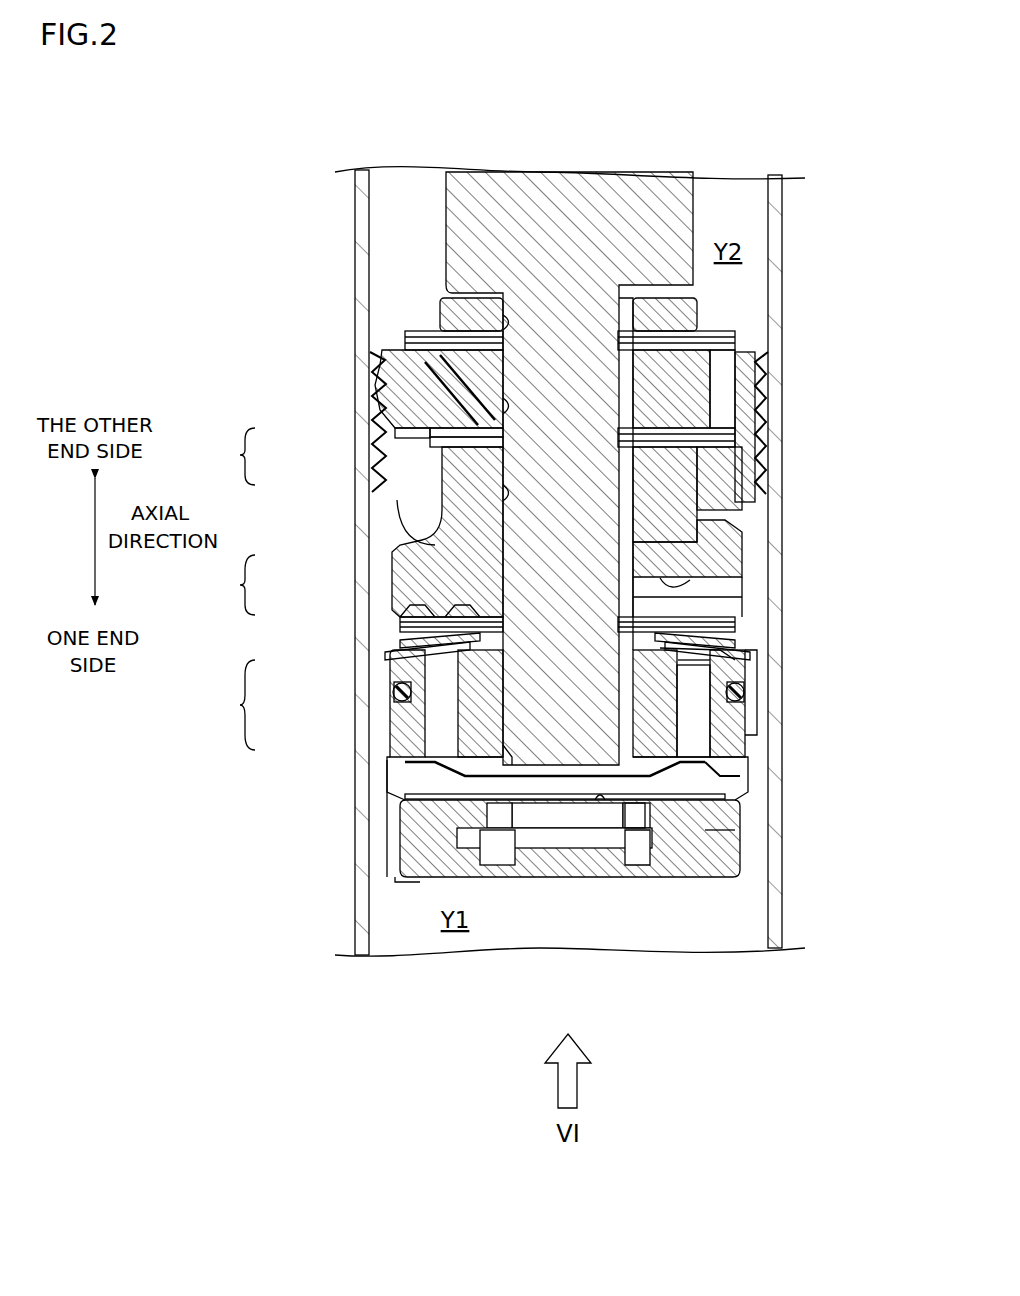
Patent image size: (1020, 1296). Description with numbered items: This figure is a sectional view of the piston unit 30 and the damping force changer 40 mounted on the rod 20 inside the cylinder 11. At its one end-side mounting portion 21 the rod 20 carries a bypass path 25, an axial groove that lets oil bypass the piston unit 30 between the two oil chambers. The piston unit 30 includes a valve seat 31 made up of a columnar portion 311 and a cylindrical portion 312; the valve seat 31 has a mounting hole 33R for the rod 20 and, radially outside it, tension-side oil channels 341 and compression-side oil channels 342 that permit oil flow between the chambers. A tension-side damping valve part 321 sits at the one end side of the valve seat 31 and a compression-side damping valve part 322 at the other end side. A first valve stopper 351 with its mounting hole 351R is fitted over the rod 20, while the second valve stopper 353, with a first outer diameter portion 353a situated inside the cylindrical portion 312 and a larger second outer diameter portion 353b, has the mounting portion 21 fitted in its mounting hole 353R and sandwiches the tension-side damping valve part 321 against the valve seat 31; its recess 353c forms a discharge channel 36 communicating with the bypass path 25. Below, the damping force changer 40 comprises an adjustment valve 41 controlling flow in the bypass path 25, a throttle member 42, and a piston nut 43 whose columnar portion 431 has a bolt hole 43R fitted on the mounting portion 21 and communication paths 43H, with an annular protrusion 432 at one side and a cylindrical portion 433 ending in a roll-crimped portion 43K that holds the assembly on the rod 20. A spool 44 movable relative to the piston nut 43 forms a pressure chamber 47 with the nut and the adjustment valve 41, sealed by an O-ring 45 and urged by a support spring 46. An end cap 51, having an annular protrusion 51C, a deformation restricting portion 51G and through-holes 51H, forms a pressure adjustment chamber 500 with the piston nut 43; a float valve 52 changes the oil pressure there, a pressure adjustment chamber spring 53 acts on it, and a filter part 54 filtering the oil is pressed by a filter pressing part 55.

The cylinder 11 is at (783, 228).
The rod 20 is at (700, 212).
The one end-side mounting portion 21 is at (600, 486).
The bypass path 25 is at (623, 413).
The piston unit 30 is at (728, 322).
The valve seat 31 is at (240, 455).
The columnar portion 311 is at (372, 414).
The cylindrical portion 312 is at (372, 462).
The tension-side damping valve part 321 is at (715, 440).
The compression-side damping valve part 322 is at (735, 340).
The mounting hole 33R is at (505, 408).
The tension-side oil channels 341 is at (420, 385).
The compression-side oil channels 342 is at (720, 373).
The first valve stopper 351 is at (475, 312).
The mounting hole 351R is at (505, 325).
The second valve stopper 353 is at (240, 585).
The first outer diameter portion 353a is at (420, 522).
The second outer diameter portion 353b is at (395, 590).
The recess 353c is at (690, 580).
The mounting hole 353R is at (505, 493).
The discharge channel 36 is at (640, 598).
The damping force changer 40 is at (380, 915).
The adjustment valve 41 is at (720, 625).
The throttle member 42 is at (710, 640).
The piston nut 43 is at (240, 705).
The columnar portion 431 is at (392, 720).
The annular protrusion 432 is at (430, 655).
The cylindrical portion 433 is at (430, 758).
The communication paths 43H is at (698, 728).
The crimped portion 43K is at (415, 872).
The bolt hole 43R is at (617, 720).
The spool 44 is at (758, 722).
The O-ring 45 is at (742, 692).
The support spring 46 is at (705, 650).
The pressure chamber 47 is at (708, 662).
The pressure adjustment chamber 500 is at (708, 775).
The end cap 51 is at (720, 835).
The annular protrusion 51C is at (720, 800).
The deformation restricting portion 51G is at (600, 797).
The through-holes 51H is at (635, 815).
The float valve 52 is at (430, 797).
The pressure adjustment chamber spring 53 is at (440, 770).
The filter part 54 is at (480, 840).
The filter pressing part 55 is at (735, 868).